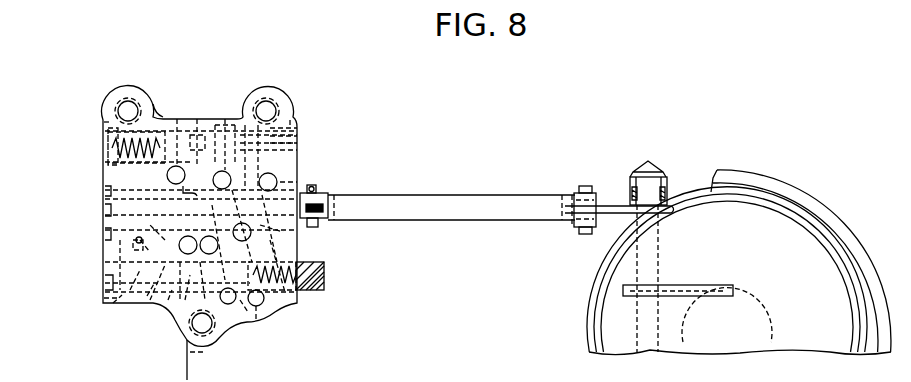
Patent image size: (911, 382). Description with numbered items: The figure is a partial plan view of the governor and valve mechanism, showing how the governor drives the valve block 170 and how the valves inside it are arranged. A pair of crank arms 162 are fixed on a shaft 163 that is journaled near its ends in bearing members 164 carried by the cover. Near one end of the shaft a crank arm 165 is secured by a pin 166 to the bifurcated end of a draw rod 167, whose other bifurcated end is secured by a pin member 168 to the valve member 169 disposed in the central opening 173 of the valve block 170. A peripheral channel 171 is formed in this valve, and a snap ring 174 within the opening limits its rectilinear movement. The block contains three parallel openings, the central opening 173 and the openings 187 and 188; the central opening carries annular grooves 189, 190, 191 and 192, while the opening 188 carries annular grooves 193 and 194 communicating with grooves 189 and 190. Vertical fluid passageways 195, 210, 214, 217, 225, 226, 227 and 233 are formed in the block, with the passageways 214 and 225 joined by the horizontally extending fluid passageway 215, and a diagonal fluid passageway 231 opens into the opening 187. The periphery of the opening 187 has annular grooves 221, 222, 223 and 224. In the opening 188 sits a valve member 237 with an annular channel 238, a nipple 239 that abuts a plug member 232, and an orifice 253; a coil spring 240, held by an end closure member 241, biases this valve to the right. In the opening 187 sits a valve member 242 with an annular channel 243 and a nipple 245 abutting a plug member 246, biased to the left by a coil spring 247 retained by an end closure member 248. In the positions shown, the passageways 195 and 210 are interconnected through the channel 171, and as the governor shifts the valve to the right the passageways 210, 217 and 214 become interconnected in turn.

The crank arms 162 is at (696, 279).
The shaft 163 is at (650, 252).
The bearing members 164 is at (667, 190).
The crank arm 165 is at (605, 206).
The pin 166 is at (581, 220).
The draw rod 167 is at (450, 202).
The pin member 168 is at (332, 221).
The valve member 169 is at (107, 199).
The valve block 170 is at (132, 297).
The peripheral channel 171 is at (183, 192).
The central opening 173 is at (104, 231).
The snap ring 174 is at (103, 192).
The opening 187 is at (102, 306).
The opening 188 is at (115, 90).
The annular groove 189 is at (147, 296).
The annular groove 190 is at (261, 323).
The annular groove 191 is at (242, 90).
The annular groove 192 is at (285, 233).
The annular groove 193 is at (156, 94).
The annular groove 194 is at (222, 125).
The fluid passageway 195 is at (177, 166).
The fluid passageway 210 is at (278, 168).
The fluid passageway 214 is at (302, 182).
The horizontally extending fluid passageway 215 is at (316, 290).
The fluid passageway 217 is at (253, 236).
The annular groove 221 is at (185, 300).
The annular groove 222 is at (222, 340).
The annular groove 223 is at (213, 232).
The annular groove 224 is at (267, 303).
The fluid passageway 225 is at (236, 303).
The fluid passageway 226 is at (262, 305).
The fluid passageway 227 is at (200, 240).
The diagonal fluid passageway 231 is at (138, 240).
The plug member 232 is at (297, 112).
The fluid passageway 233 is at (188, 367).
The valve member 237 is at (285, 89).
The annular channel 238 is at (197, 119).
The nipple 239 is at (302, 125).
The coil spring 240 is at (103, 110).
The end closure member 241 is at (107, 145).
The valve member 242 is at (109, 231).
The annular channel 243 is at (168, 300).
The nipple 245 is at (106, 273).
The plug member 246 is at (113, 308).
The coil spring 247 is at (324, 280).
The end closure member 248 is at (318, 294).
The orifice 253 is at (305, 141).